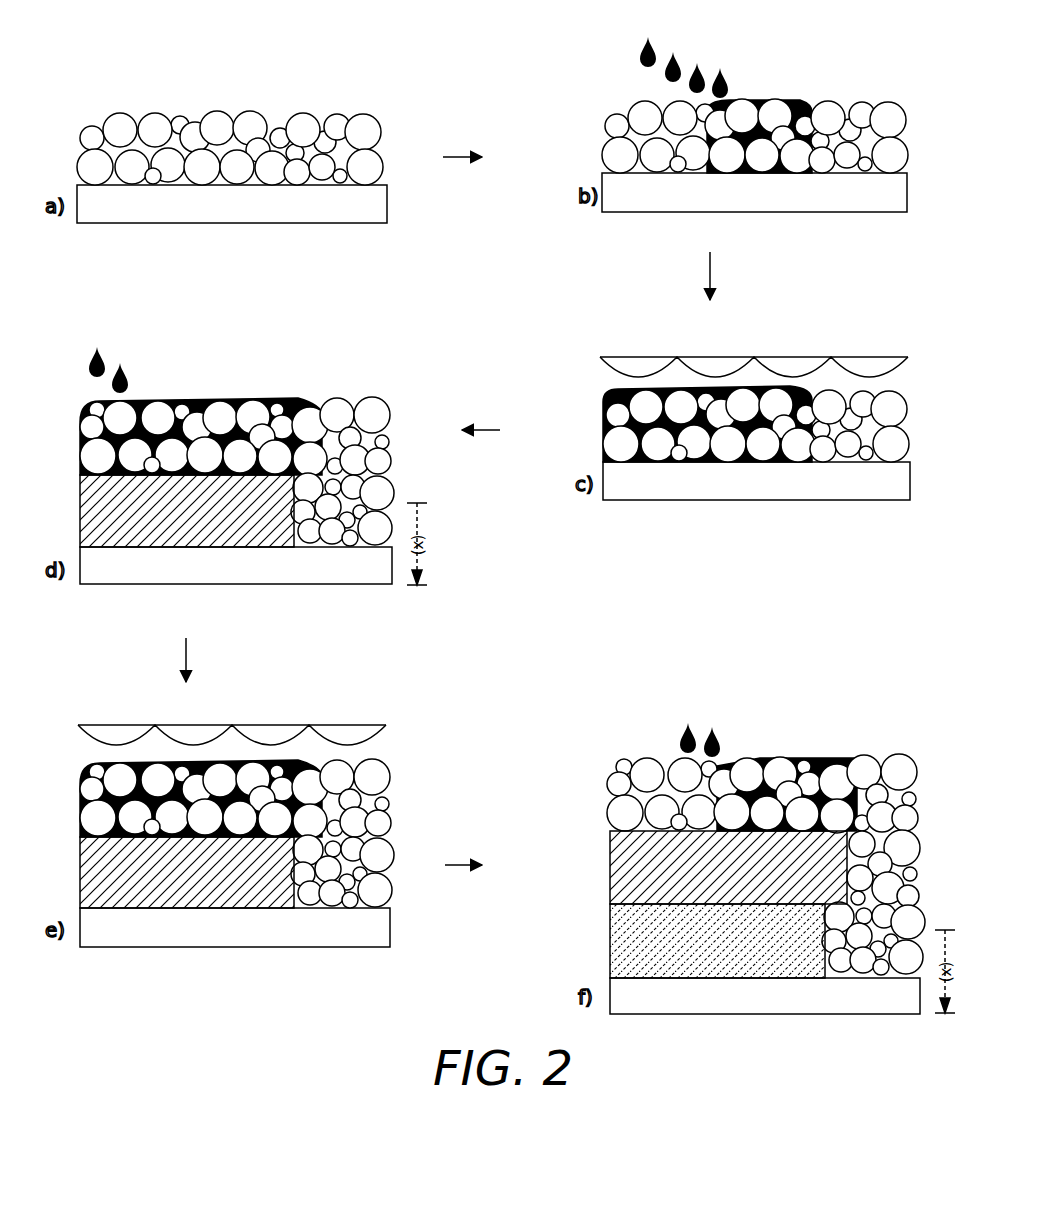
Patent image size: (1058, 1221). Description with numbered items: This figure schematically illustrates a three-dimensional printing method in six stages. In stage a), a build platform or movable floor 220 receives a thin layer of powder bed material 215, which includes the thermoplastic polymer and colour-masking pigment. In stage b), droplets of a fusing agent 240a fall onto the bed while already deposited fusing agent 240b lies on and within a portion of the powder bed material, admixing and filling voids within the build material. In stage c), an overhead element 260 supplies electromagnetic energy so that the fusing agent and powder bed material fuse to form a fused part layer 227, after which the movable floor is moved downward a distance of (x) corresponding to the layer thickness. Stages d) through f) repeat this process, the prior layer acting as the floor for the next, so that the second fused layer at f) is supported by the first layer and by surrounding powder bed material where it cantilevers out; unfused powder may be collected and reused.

The powder bed material 215 is at (119, 125).
The movable floor 220 is at (232, 204).
The droplets of fusing agent 240a is at (638, 54).
The deposited fusing agent 240b is at (758, 102).
The heat lamp 260 is at (793, 367).
The fused part layer 227 is at (192, 495).